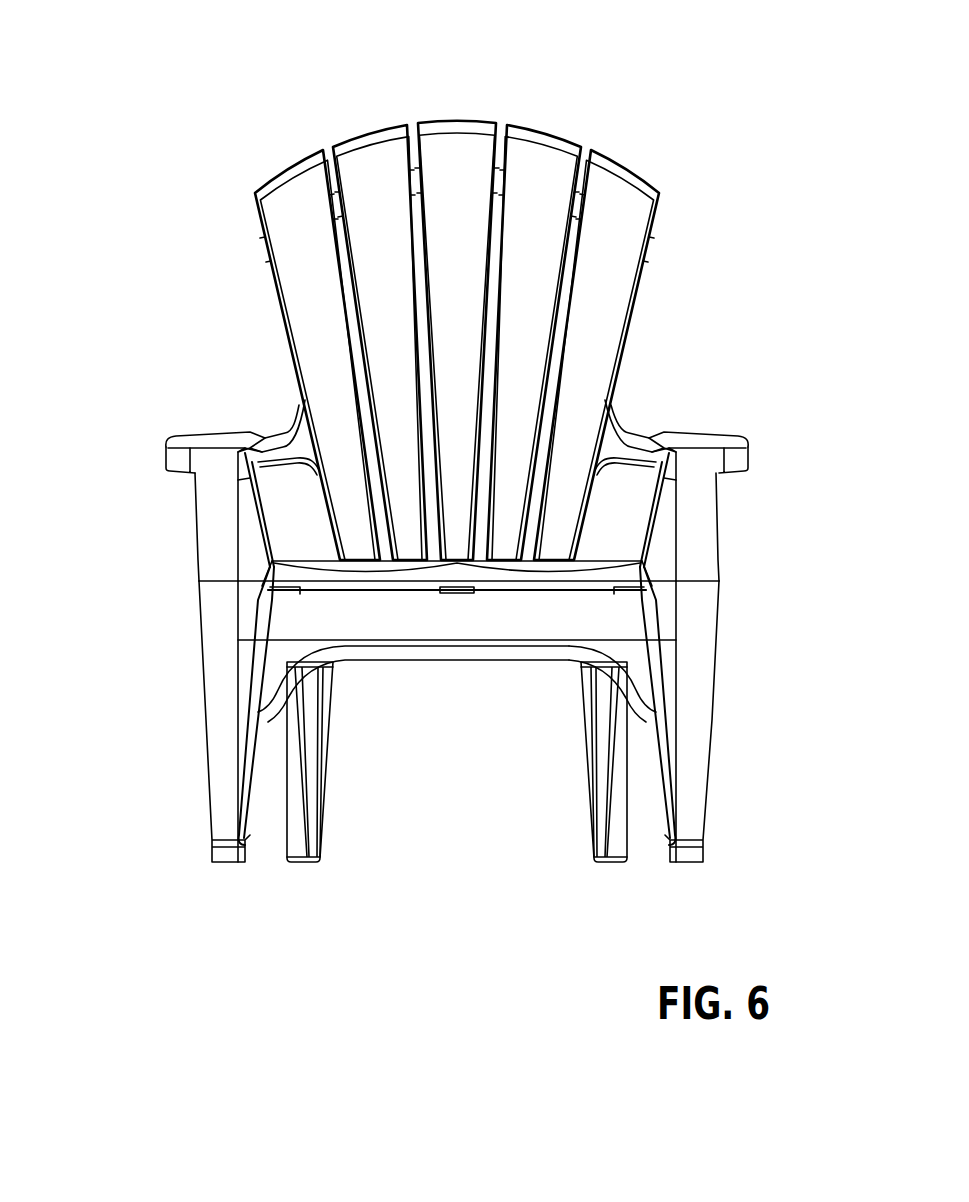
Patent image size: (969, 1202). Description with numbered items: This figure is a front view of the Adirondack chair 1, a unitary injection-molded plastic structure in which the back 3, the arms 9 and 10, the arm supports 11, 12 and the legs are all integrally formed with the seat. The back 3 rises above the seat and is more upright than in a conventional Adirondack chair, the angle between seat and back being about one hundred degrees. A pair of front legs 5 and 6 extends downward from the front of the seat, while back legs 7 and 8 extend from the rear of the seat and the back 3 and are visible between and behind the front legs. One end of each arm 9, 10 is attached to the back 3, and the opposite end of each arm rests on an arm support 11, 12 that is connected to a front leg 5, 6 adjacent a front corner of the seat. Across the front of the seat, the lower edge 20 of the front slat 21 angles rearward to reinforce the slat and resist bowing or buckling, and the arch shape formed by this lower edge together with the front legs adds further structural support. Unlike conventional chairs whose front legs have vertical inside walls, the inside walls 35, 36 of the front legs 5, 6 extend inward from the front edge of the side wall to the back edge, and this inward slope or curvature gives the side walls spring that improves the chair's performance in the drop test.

The Adirondack chair 1 is at (461, 455).
The back 3 is at (473, 120).
The front leg 5 is at (203, 740).
The front leg 6 is at (707, 697).
The back leg 7 is at (323, 827).
The back leg 8 is at (590, 835).
The arm 9 is at (203, 443).
The arm 10 is at (703, 428).
The arm support 11 is at (215, 555).
The arm support 12 is at (708, 543).
The lower edge of front slat 20 is at (413, 660).
The front slat 21 is at (522, 617).
The inside wall of front leg 35 is at (245, 653).
The inside wall of front leg 36 is at (695, 617).